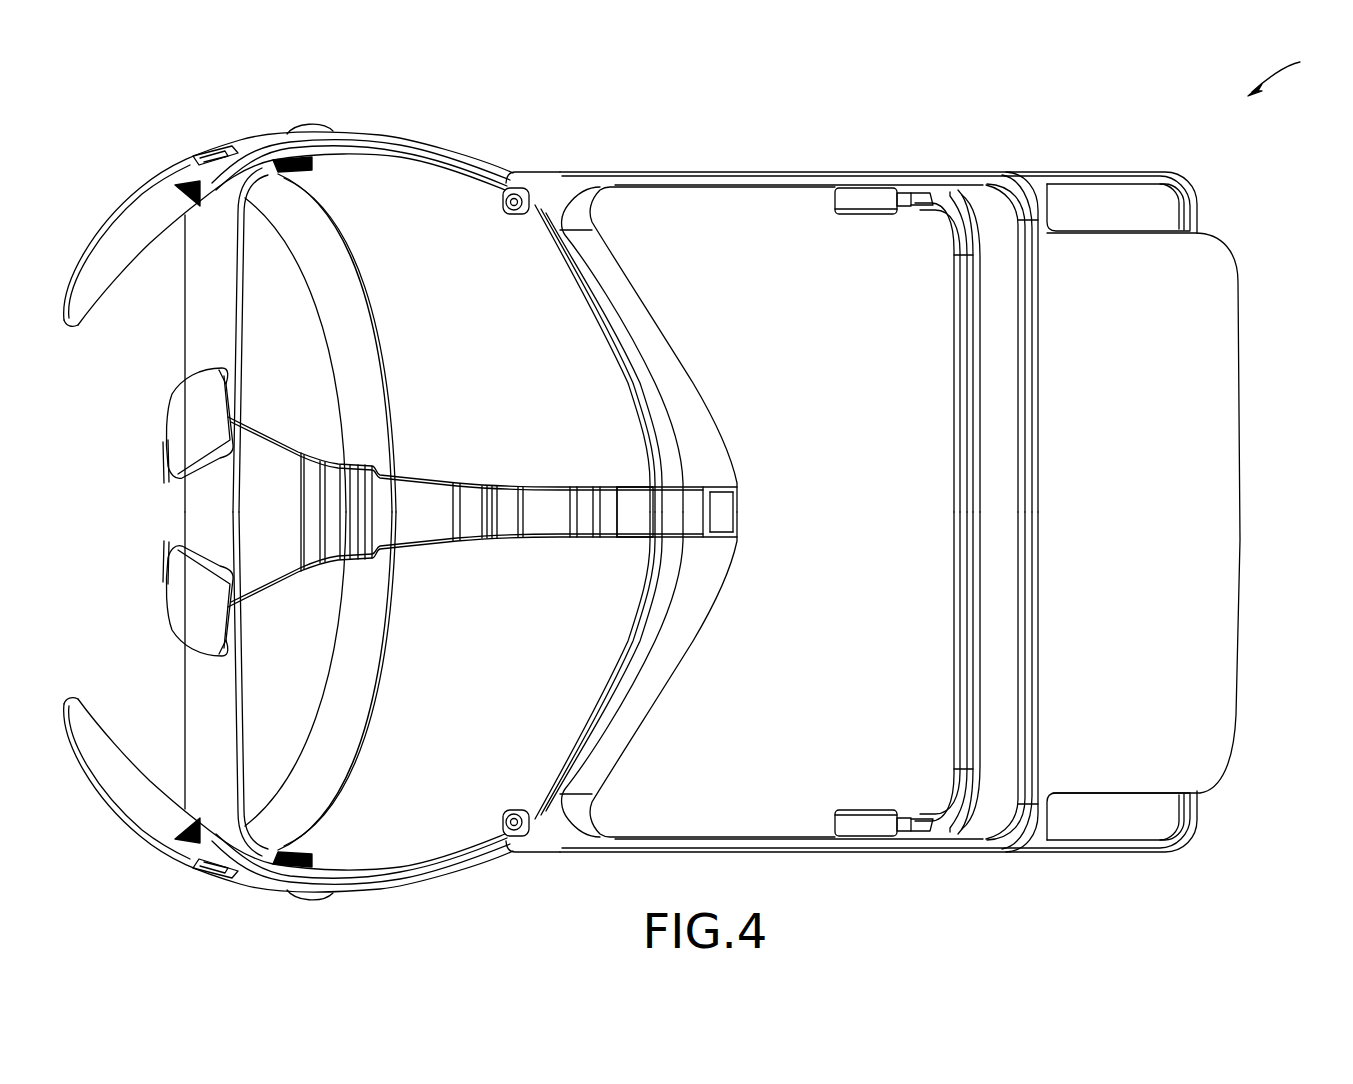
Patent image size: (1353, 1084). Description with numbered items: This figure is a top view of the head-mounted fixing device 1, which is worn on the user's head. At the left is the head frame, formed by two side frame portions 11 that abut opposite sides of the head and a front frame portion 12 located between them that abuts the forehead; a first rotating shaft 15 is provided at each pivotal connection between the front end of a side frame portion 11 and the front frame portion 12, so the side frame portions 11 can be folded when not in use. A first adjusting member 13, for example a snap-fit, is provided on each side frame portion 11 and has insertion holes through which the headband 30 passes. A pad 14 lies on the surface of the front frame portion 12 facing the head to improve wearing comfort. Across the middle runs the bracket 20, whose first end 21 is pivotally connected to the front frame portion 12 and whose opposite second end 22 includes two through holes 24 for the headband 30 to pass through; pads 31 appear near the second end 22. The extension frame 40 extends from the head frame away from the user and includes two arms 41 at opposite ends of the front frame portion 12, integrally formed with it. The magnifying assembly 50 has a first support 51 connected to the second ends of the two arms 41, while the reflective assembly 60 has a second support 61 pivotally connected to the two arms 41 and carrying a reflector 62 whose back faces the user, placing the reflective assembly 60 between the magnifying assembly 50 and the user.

The head-mounted fixing device 1 is at (1288, 68).
The side frame portion 11 is at (95, 236).
The front frame portion 12 is at (680, 405).
The first adjusting member 13 is at (272, 130).
The pad 14 is at (614, 676).
The first rotating shaft 15 is at (508, 212).
The bracket 20 is at (425, 532).
The first end 21 is at (648, 510).
The second end 22 is at (265, 490).
The through hole 24 is at (160, 467).
The headband 30 is at (370, 386).
The pad 31 is at (183, 406).
The extension frame 40 is at (758, 472).
The arm 41 is at (760, 170).
The magnifying assembly 50 is at (1200, 513).
The first support 51 is at (1240, 392).
The reflective assembly 60 is at (1101, 474).
The second support 61 is at (1110, 172).
The reflector 62 is at (1185, 210).